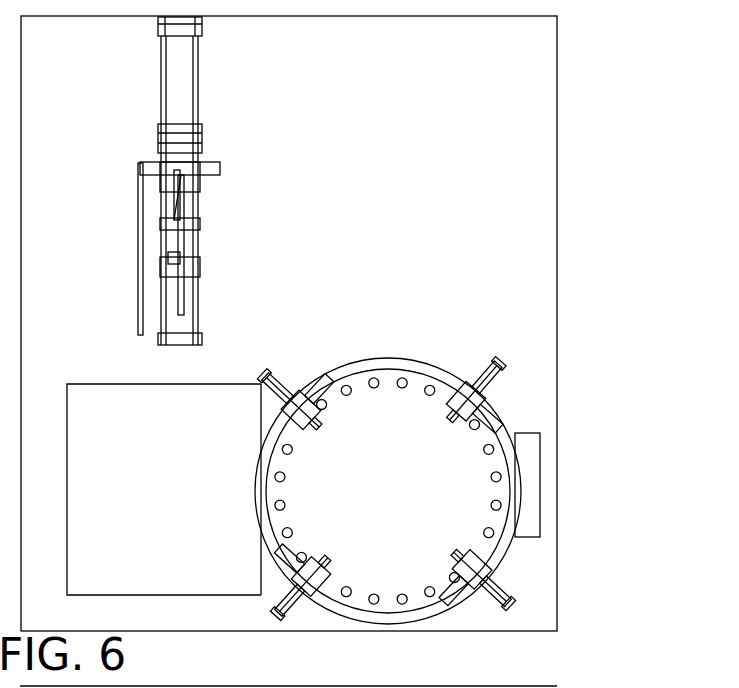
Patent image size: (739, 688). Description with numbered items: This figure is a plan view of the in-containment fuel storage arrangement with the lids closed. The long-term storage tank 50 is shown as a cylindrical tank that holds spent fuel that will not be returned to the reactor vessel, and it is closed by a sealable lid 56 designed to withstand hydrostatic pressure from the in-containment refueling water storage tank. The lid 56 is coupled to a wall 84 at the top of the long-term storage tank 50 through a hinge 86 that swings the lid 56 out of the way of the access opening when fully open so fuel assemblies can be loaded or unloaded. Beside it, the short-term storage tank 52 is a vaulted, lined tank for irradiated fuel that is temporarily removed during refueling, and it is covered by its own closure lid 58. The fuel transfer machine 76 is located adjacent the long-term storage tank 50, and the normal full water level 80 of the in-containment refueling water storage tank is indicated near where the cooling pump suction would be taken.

The long-term storage tank 50 is at (404, 363).
The short-term storage tank 52 is at (222, 400).
The lid 56 is at (494, 419).
The closure lid 58 is at (106, 398).
The fuel transfer machine 76 is at (203, 161).
The in-containment refueling water storage tank water level 80 is at (283, 396).
The wall 84 is at (537, 577).
The hinge 86 is at (530, 474).